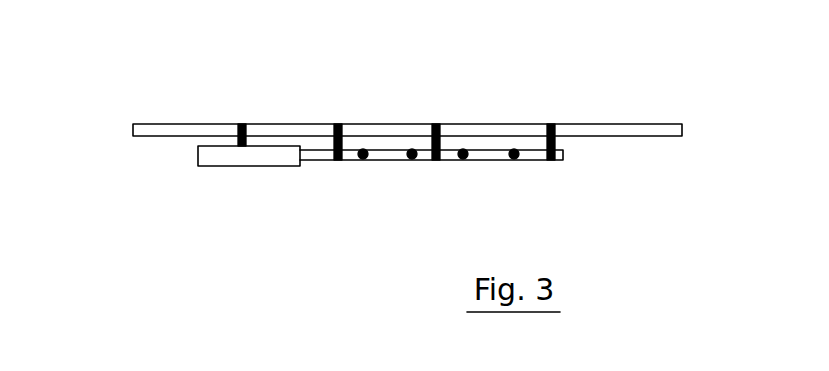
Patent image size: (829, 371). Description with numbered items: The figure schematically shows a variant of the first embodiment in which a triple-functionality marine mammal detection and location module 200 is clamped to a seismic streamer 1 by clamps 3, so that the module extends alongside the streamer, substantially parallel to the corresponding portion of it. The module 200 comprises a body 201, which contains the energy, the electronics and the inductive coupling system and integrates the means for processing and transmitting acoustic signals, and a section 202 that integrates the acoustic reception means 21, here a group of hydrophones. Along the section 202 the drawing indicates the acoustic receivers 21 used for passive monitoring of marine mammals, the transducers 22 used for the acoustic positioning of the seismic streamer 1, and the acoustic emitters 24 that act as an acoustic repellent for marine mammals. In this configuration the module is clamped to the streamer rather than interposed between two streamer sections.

The seismic streamer 1 is at (595, 124).
The clamps 3 is at (243, 124).
The electronic module 200 is at (336, 217).
The body 201 is at (272, 157).
The section 202 is at (389, 160).
The acoustic reception means 21 is at (413, 159).
The transducers 22 is at (362, 159).
The acoustic emitters 24 is at (515, 159).